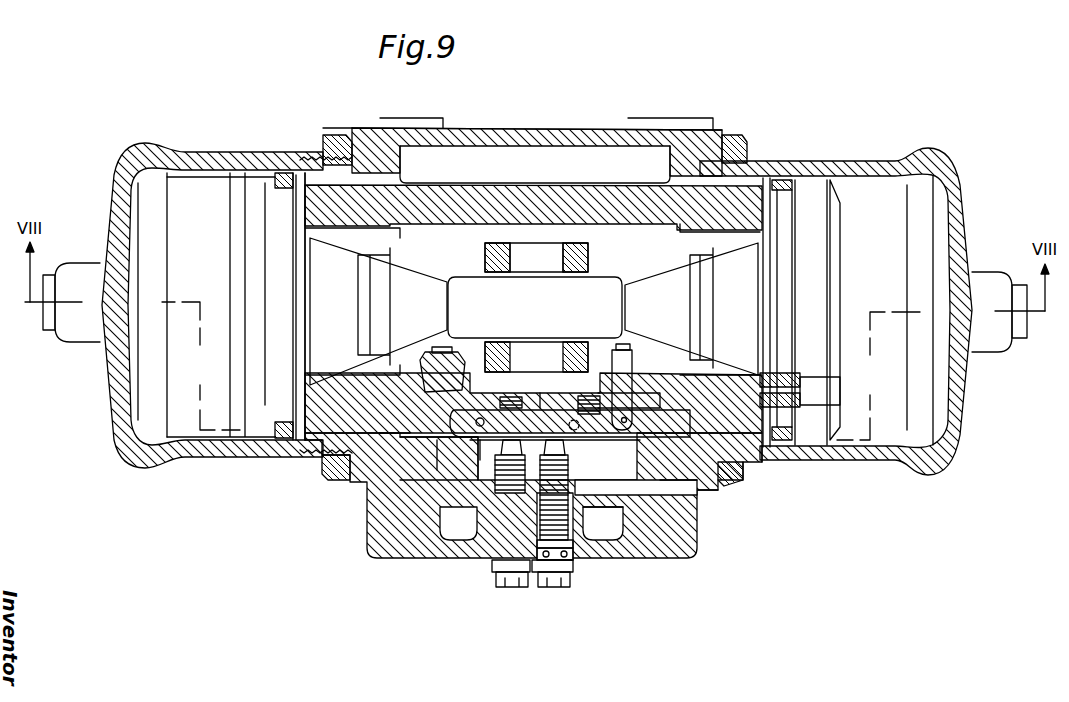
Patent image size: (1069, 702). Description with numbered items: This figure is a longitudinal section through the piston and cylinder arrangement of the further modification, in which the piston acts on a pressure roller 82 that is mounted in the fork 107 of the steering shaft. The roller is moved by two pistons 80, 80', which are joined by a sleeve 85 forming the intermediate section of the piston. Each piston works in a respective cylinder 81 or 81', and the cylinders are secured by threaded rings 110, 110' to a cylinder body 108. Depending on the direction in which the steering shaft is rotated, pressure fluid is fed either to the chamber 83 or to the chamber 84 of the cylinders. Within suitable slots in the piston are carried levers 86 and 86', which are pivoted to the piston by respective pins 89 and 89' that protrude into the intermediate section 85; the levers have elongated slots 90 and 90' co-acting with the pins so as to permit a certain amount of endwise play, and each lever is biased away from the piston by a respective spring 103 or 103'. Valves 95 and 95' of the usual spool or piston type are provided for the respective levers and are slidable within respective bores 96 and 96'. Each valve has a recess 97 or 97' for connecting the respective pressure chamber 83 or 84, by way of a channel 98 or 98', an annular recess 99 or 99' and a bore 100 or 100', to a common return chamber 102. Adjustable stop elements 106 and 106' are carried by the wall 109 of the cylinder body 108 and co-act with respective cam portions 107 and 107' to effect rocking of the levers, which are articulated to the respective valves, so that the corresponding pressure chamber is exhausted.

The piston 80 is at (236, 264).
The piston 80' is at (801, 269).
The cylinder 81 is at (836, 335).
The cylinder 81' is at (227, 320).
The pressure roller 82 is at (582, 290).
The chamber 83 is at (207, 192).
The chamber 84 is at (868, 195).
The sleeve 85 is at (367, 417).
The lever 86 is at (590, 520).
The lever 86' is at (430, 534).
The pin 89 is at (538, 533).
The pin 89' is at (563, 354).
The elongated slot 90 is at (482, 522).
The elongated slot 90' is at (584, 435).
The valve 95 is at (691, 552).
The valve 95' is at (430, 524).
The bore 96 is at (609, 365).
The bore 96' is at (362, 520).
The recess 97 is at (736, 516).
The recess 97' is at (387, 520).
The channel 98 is at (783, 488).
The channel 98' is at (312, 487).
The annular recess 99 is at (777, 483).
The annular recess 99' is at (440, 350).
The bore 100 is at (692, 299).
The bore 100' is at (376, 306).
The common return chamber 102 is at (597, 163).
The spring 103 is at (627, 449).
The spring 103' is at (527, 353).
The adjustable stop element 106 is at (564, 537).
The adjustable stop element 106' is at (518, 537).
The cam portion 107 is at (511, 284).
The cam portion 107' is at (565, 437).
The cylinder body 108 is at (492, 135).
The wall 109 is at (618, 548).
The threaded ring 110 is at (755, 125).
The threaded ring 110' is at (340, 124).